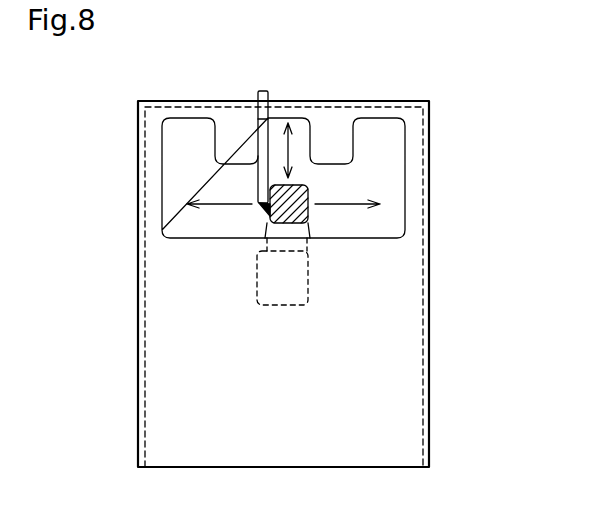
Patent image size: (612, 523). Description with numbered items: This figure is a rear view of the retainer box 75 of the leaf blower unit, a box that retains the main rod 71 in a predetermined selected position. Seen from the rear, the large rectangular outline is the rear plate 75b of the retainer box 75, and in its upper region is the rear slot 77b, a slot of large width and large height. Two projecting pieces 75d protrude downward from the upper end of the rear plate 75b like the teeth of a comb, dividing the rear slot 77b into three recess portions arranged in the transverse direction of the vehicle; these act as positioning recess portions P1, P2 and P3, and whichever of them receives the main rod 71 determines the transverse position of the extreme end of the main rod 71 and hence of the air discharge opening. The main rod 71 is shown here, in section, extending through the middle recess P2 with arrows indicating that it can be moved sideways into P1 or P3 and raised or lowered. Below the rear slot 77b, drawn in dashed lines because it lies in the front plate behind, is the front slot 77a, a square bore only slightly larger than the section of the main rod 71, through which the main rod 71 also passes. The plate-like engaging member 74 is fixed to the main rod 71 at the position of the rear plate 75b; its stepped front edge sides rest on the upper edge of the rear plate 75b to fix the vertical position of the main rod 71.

The main rod 71 is at (308, 211).
The engaging member 74 is at (260, 90).
The retainer box 75 is at (134, 333).
The rear plate 75b is at (400, 428).
The projecting pieces 75d is at (222, 157).
The front slot 77a is at (305, 287).
The rear slot 77b is at (386, 235).
The positioning recess portion P1 is at (195, 133).
The positioning recess portion P2 is at (298, 130).
The positioning recess portion P3 is at (380, 132).